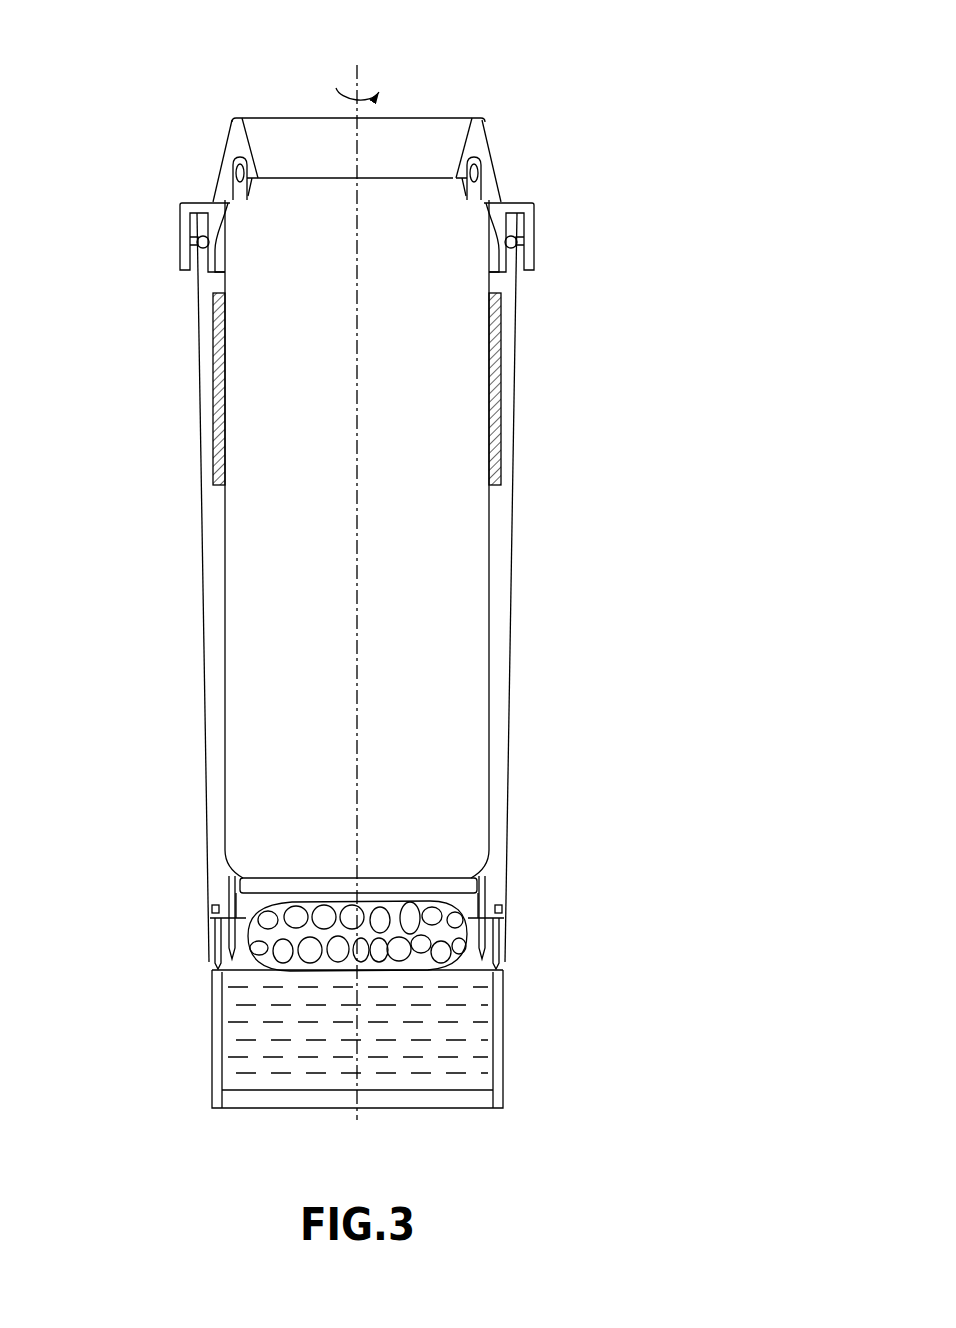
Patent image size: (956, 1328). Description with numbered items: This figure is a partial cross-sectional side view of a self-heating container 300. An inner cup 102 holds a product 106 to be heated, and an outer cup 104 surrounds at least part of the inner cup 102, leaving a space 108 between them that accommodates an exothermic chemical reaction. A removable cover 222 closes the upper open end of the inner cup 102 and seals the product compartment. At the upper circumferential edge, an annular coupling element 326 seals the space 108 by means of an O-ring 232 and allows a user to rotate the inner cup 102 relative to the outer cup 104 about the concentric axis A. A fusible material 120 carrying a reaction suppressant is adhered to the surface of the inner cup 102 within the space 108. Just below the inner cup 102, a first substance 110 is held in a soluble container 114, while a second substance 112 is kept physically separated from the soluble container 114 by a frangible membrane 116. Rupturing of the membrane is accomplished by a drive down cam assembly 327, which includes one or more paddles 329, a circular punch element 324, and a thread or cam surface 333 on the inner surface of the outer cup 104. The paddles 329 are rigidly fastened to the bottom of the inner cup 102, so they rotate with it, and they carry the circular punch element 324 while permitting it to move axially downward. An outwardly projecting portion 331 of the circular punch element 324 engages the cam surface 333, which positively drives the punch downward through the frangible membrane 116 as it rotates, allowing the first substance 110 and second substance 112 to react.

The self-heating container 300 is at (373, 560).
The removable cover 222 is at (431, 128).
The annular coupling element 326 is at (430, 217).
The O-ring 232 is at (513, 248).
The fusible material 120 is at (500, 372).
The product 106 is at (318, 510).
The inner cup 102 is at (490, 568).
The space 108 is at (500, 635).
The outer cup 104 is at (514, 702).
The drive down cam assembly 327 is at (189, 856).
The paddles 329 is at (228, 885).
The cam surface 333 is at (208, 908).
The outwardly projecting portion 331 is at (208, 925).
The circular punch element 324 is at (217, 942).
The frangible membrane 116 is at (283, 972).
The soluble container 114 is at (471, 906).
The first substance 110 is at (448, 942).
The second substance 112 is at (483, 1036).